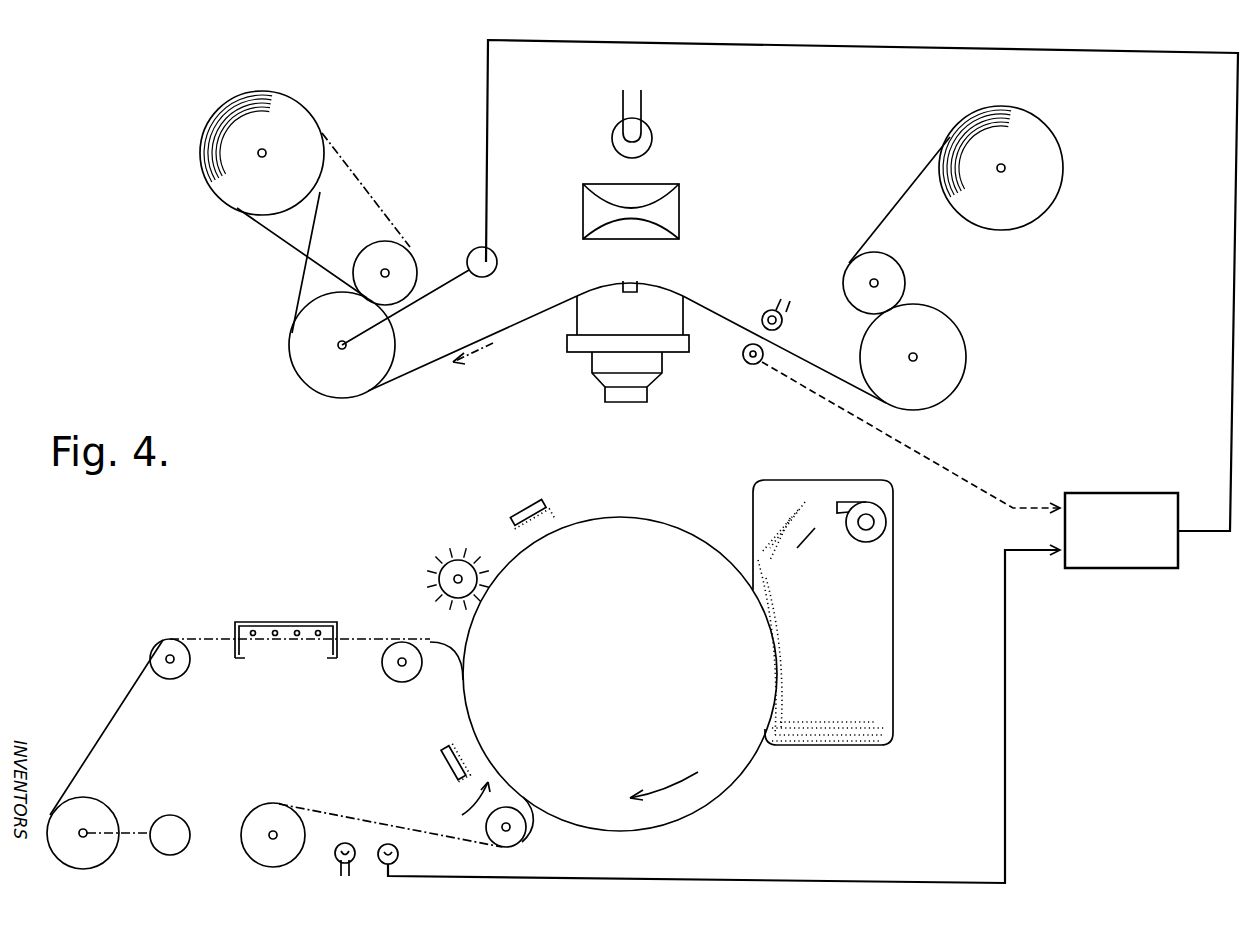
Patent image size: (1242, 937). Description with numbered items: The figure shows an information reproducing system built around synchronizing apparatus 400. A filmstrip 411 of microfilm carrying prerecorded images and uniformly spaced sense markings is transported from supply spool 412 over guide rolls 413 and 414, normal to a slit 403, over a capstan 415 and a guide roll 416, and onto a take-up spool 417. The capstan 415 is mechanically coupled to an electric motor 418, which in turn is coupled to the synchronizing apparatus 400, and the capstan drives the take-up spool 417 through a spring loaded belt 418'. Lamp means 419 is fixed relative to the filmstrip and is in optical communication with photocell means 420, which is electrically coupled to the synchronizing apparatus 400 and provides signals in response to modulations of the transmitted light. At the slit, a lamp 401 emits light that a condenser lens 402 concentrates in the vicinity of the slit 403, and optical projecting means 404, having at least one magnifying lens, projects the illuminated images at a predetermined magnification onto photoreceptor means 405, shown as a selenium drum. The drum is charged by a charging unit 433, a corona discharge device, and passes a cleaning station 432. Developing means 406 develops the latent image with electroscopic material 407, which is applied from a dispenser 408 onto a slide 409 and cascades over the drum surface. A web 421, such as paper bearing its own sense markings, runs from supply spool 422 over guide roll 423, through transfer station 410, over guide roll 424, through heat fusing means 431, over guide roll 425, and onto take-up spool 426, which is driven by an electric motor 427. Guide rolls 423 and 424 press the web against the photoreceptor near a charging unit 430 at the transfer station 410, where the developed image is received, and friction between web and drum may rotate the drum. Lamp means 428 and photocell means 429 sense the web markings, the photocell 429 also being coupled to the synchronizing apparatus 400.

The synchronizing apparatus 400 is at (1105, 568).
The lamp 401 is at (652, 138).
The condenser lens 402 is at (679, 202).
The slit 403 is at (627, 280).
The optical projecting means 404 is at (640, 395).
The photoreceptor means 405 is at (660, 520).
The developing means 406 is at (893, 611).
The electroscopic material 407 is at (815, 732).
The dispenser 408 is at (860, 542).
The slide 409 is at (782, 563).
The transfer station 410 is at (455, 804).
The filmstrip 411 is at (515, 318).
The supply spool 412 is at (1050, 205).
The guide roll 413 is at (906, 278).
The guide roll 414 is at (967, 354).
The capstan 415 is at (290, 337).
The guide roll 416 is at (358, 264).
The take-up spool 417 is at (215, 207).
The electric motor 418 is at (499, 247).
The spring loaded belt 418' is at (315, 214).
The lamp means 419 is at (764, 311).
The photocell means 420 is at (745, 360).
The web 421 is at (360, 813).
The supply spool 422 is at (250, 845).
The guide roll 423 is at (520, 838).
The guide roll 424 is at (390, 680).
The guide roll 425 is at (185, 678).
The take-up spool 426 is at (108, 812).
The electric motor 427 is at (172, 815).
The lamp means 428 is at (338, 864).
The photocell means 429 is at (385, 864).
The charging unit 430 is at (444, 760).
The heat fusing means 431 is at (285, 620).
The cleaning station 432 is at (450, 560).
The charging unit 433 is at (526, 506).